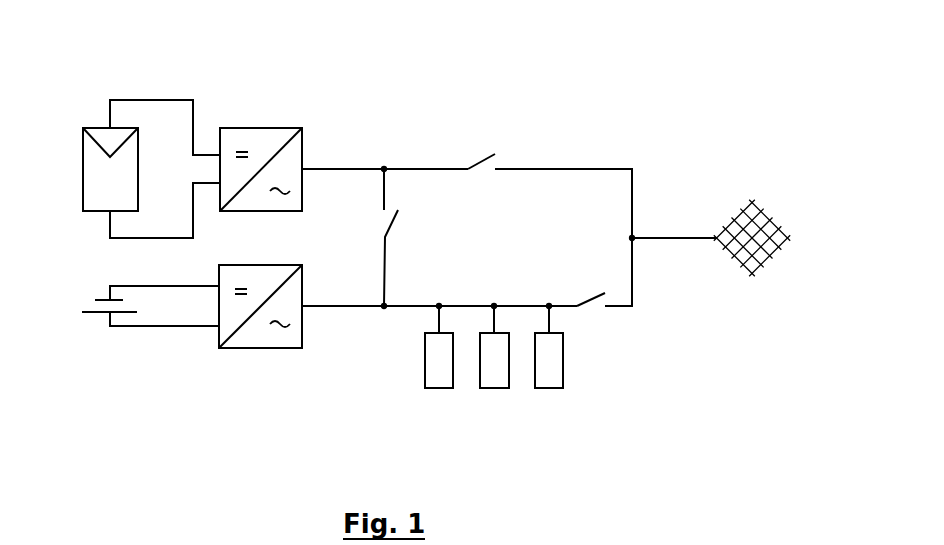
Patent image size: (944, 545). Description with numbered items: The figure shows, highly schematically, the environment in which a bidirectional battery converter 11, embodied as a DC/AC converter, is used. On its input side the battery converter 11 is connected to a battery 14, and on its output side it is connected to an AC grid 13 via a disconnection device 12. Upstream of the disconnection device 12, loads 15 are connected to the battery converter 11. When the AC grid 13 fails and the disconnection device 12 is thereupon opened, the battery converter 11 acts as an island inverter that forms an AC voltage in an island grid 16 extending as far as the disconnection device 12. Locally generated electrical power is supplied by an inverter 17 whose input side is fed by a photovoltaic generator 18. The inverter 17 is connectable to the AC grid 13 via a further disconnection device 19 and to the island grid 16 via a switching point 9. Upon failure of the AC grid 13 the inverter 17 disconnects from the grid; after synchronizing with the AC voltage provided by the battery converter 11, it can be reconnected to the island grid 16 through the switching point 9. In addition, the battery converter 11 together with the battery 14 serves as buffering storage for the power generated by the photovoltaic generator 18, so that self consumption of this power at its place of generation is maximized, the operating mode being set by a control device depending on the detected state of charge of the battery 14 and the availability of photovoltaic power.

The switching point 9 is at (392, 200).
The bidirectional battery converter 11 is at (255, 350).
The disconnection device 12 is at (593, 318).
The AC grid 13 is at (773, 213).
The battery 14 is at (97, 325).
The loads 15 is at (428, 393).
The island grid 16 is at (515, 245).
The inverter 17 is at (262, 125).
The photovoltaic generator 18 is at (90, 125).
The disconnection device 19 is at (485, 142).